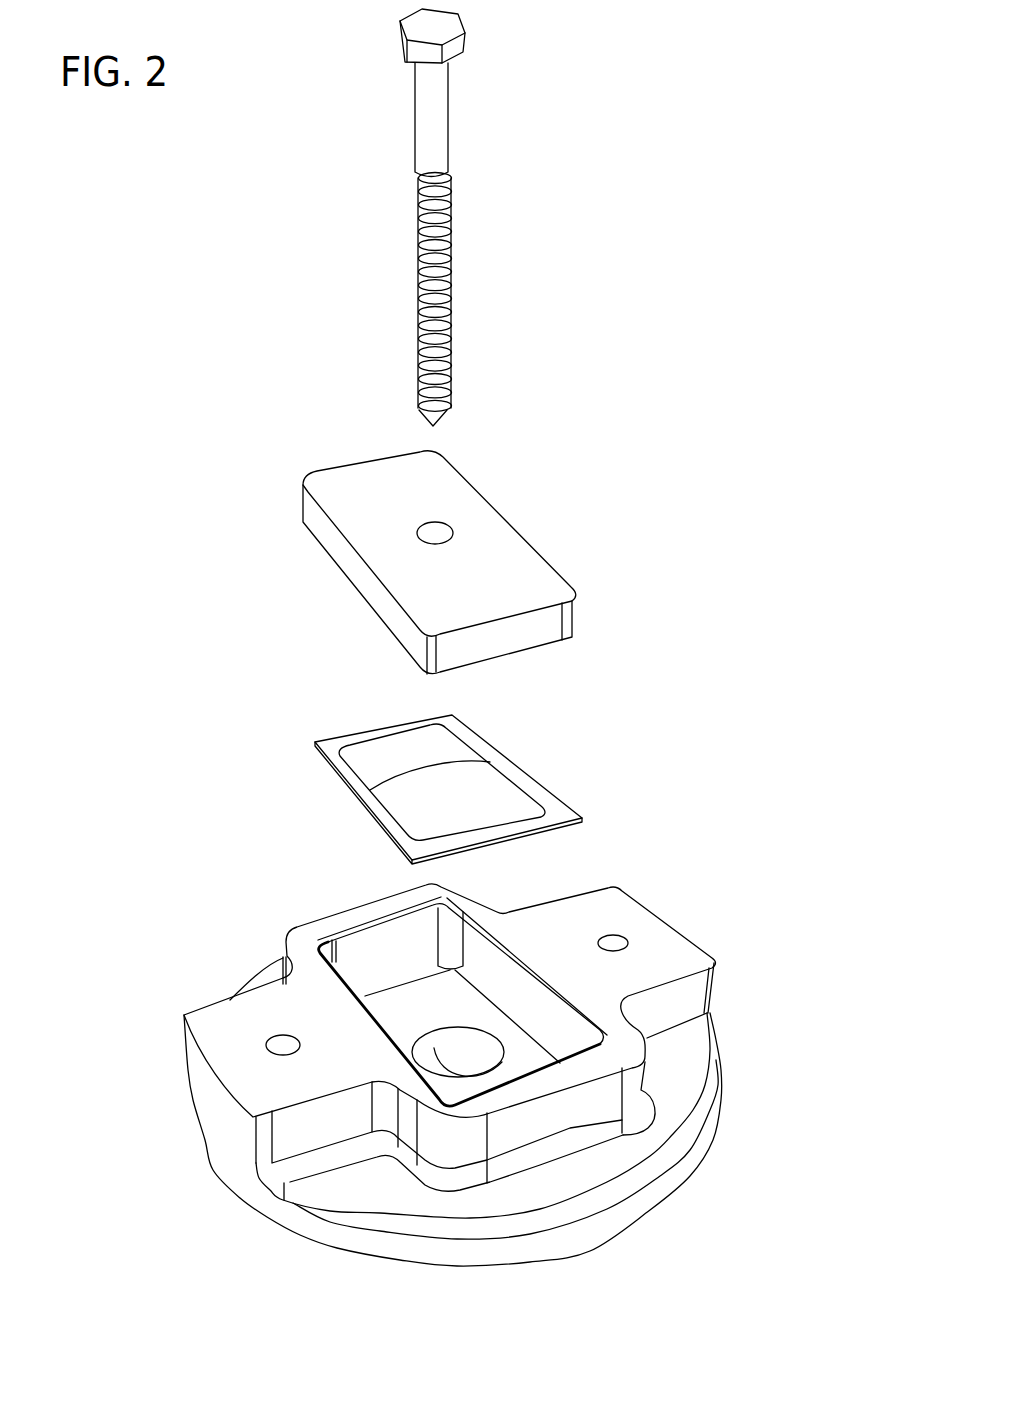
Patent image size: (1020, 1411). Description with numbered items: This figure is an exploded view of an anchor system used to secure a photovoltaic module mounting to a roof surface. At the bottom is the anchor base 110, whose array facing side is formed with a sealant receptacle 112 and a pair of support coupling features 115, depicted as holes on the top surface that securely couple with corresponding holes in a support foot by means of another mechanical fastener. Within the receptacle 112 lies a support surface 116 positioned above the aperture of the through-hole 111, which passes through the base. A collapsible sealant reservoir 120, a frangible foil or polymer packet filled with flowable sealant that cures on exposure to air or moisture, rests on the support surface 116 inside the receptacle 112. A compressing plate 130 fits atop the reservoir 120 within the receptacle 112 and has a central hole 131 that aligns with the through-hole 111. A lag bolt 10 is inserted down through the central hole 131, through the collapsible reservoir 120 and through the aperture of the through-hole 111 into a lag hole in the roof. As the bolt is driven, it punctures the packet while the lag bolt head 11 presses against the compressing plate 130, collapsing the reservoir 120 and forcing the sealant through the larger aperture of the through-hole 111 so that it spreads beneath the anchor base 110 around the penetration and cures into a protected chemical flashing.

The lag bolt 10 is at (466, 217).
The lag bolt head 11 is at (455, 47).
The compressing plate 130 is at (459, 562).
The central hole 131 is at (435, 533).
The collapsible sealant reservoir 120 is at (522, 768).
The anchor base 110 is at (469, 1045).
The through-hole 111 is at (470, 1050).
The sealant receptacle 112 is at (470, 947).
The support surface 116 is at (390, 1003).
The support coupling features 115 is at (620, 940).